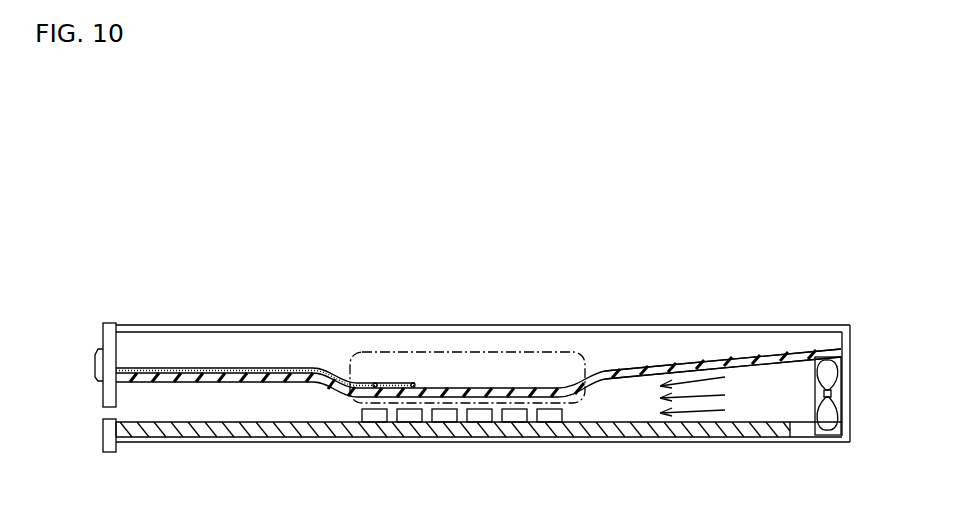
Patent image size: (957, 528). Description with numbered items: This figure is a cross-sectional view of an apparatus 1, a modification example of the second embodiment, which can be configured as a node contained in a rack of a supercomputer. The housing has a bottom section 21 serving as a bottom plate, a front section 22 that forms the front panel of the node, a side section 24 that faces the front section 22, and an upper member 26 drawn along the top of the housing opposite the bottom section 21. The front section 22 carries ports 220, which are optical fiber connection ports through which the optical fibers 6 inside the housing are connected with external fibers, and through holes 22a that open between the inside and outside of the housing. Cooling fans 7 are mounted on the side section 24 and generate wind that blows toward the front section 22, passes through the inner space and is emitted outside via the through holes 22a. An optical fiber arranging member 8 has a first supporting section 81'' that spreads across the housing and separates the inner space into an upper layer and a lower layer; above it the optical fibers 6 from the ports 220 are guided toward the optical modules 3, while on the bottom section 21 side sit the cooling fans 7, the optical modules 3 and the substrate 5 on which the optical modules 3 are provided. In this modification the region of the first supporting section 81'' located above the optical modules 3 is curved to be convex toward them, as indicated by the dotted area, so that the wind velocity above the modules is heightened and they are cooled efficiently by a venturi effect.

The apparatus 1 is at (815, 197).
The optical modules 3 is at (373, 416).
The substrate 5 is at (229, 433).
The optical fibers 6 is at (330, 372).
The cooling fans 7 is at (841, 397).
The optical fiber arranging member 8 is at (297, 386).
The bottom section 21 is at (163, 441).
The front section 22 is at (110, 331).
The through holes 22a is at (103, 413).
The side section 24 is at (843, 342).
The top plate 26 is at (150, 331).
The first supporting section 81'' is at (723, 349).
The ports 220 is at (95, 362).